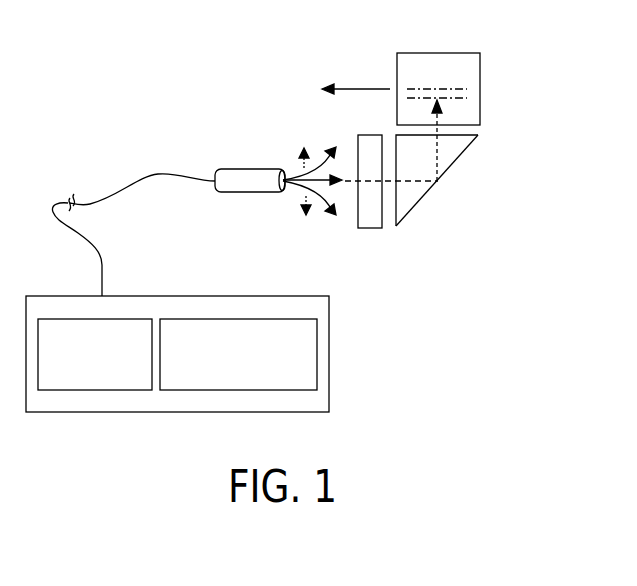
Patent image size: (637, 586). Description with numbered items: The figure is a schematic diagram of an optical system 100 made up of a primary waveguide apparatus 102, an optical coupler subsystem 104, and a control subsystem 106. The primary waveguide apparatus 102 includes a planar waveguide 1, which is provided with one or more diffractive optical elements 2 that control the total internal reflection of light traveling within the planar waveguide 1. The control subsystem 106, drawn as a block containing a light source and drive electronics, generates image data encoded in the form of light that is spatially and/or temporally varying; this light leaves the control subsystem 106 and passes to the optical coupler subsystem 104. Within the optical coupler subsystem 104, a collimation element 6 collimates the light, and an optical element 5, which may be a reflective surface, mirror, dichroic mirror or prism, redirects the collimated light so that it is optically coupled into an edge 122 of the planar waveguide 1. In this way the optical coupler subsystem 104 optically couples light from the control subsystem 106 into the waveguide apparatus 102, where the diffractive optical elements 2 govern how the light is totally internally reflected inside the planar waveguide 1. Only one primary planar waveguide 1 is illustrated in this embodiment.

The planar waveguide 1 is at (437, 53).
The diffractive optical elements 2 is at (464, 88).
The optical element 5 is at (440, 183).
The collimation element 6 is at (372, 229).
The optical system 100 is at (142, 114).
The primary waveguide apparatus 102 is at (481, 46).
The optical coupler subsystem 104 is at (492, 236).
The control subsystem 106 is at (330, 353).
The edge 122 is at (478, 126).